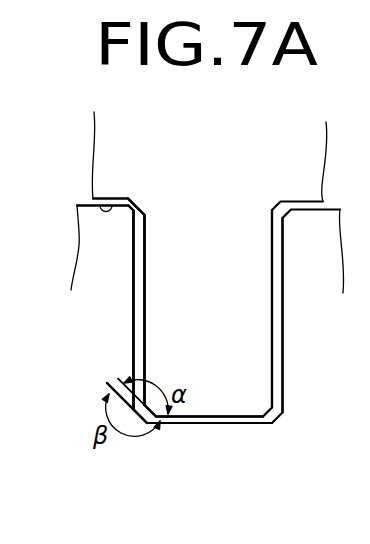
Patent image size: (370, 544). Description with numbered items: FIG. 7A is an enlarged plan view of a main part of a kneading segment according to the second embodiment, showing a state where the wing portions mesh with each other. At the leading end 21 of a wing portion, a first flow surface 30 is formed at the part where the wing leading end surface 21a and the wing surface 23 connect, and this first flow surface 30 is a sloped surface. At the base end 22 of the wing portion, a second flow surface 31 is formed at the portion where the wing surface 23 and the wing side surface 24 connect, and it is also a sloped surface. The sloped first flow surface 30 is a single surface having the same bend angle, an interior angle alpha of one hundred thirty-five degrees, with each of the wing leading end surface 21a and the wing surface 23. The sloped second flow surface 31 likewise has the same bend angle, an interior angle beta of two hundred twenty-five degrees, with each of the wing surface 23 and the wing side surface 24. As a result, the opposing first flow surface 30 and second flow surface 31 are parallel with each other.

The leading end 21 is at (86, 196).
The wing leading end surface 21a is at (205, 424).
The base end 22 is at (141, 249).
The wing surface 23 is at (145, 305).
The wing side surface 24 is at (107, 205).
The first flow surface 30 is at (131, 210).
The second flow surface 31 is at (130, 222).